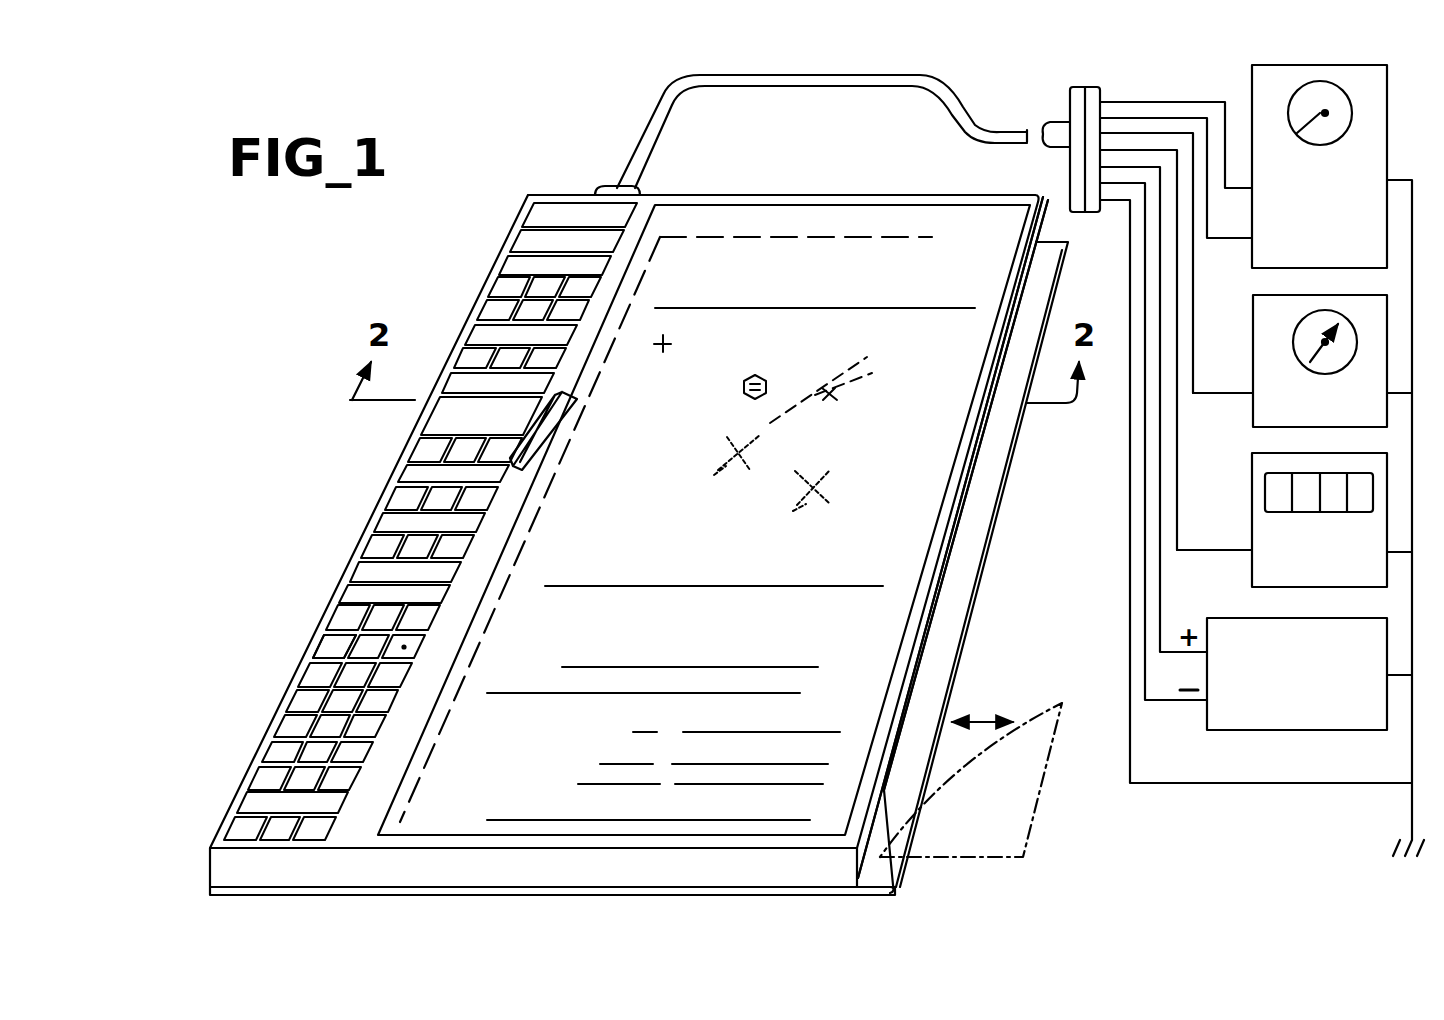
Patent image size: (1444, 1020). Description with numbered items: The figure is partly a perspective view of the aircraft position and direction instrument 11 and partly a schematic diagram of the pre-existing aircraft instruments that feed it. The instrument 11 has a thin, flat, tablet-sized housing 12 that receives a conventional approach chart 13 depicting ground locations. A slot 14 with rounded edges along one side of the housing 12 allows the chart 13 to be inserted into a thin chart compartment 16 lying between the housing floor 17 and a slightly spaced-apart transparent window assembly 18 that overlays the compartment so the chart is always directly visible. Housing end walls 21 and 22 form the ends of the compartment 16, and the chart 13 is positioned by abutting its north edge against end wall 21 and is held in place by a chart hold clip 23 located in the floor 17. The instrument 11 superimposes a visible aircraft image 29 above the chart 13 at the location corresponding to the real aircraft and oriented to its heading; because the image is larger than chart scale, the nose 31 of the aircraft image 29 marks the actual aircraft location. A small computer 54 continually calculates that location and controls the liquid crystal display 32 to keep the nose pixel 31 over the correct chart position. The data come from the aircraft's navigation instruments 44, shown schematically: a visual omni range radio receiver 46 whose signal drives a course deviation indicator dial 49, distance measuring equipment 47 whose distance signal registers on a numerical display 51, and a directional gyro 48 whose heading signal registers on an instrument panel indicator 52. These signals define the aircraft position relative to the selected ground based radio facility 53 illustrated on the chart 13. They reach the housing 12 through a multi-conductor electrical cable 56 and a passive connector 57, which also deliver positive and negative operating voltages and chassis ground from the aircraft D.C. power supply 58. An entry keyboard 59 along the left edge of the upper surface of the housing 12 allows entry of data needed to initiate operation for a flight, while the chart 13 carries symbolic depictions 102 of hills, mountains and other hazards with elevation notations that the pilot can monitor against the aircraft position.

The aircraft position and direction instrument 11 is at (343, 464).
The housing 12 is at (322, 620).
The approach chart 13 is at (1037, 833).
The slot 14 is at (920, 652).
The chart compartment 16 is at (944, 592).
The housing floor 17 is at (988, 480).
The transparent window assembly 18 is at (789, 221).
The housing end wall 21 is at (739, 189).
The housing end wall 22 is at (246, 866).
The chart hold clip 23 is at (570, 397).
The aircraft image 29 is at (805, 524).
The nose of the aircraft image 31 is at (832, 470).
The liquid crystal display 32 is at (882, 549).
The aircraft navigation instruments 44 is at (1216, 461).
The visual omni range (VOR) radio receiver 46 is at (1294, 175).
The distance measuring equipment (DME) 47 is at (1296, 520).
The directional gyro (DG) 48 is at (1299, 361).
The course deviation indicator (CDI) dial 49 is at (1292, 99).
The numerical display 51 is at (1265, 494).
The instrument panel indicator 52 is at (1293, 337).
The ground based radio facility 53 is at (782, 369).
The computer 54 is at (350, 570).
The multi-conductor electrical cable 56 is at (829, 88).
The connector 57 is at (1098, 222).
The D.C. power supply 58 is at (1253, 730).
The entry keyboard 59 is at (276, 777).
The symbolic depictions 102 is at (686, 338).